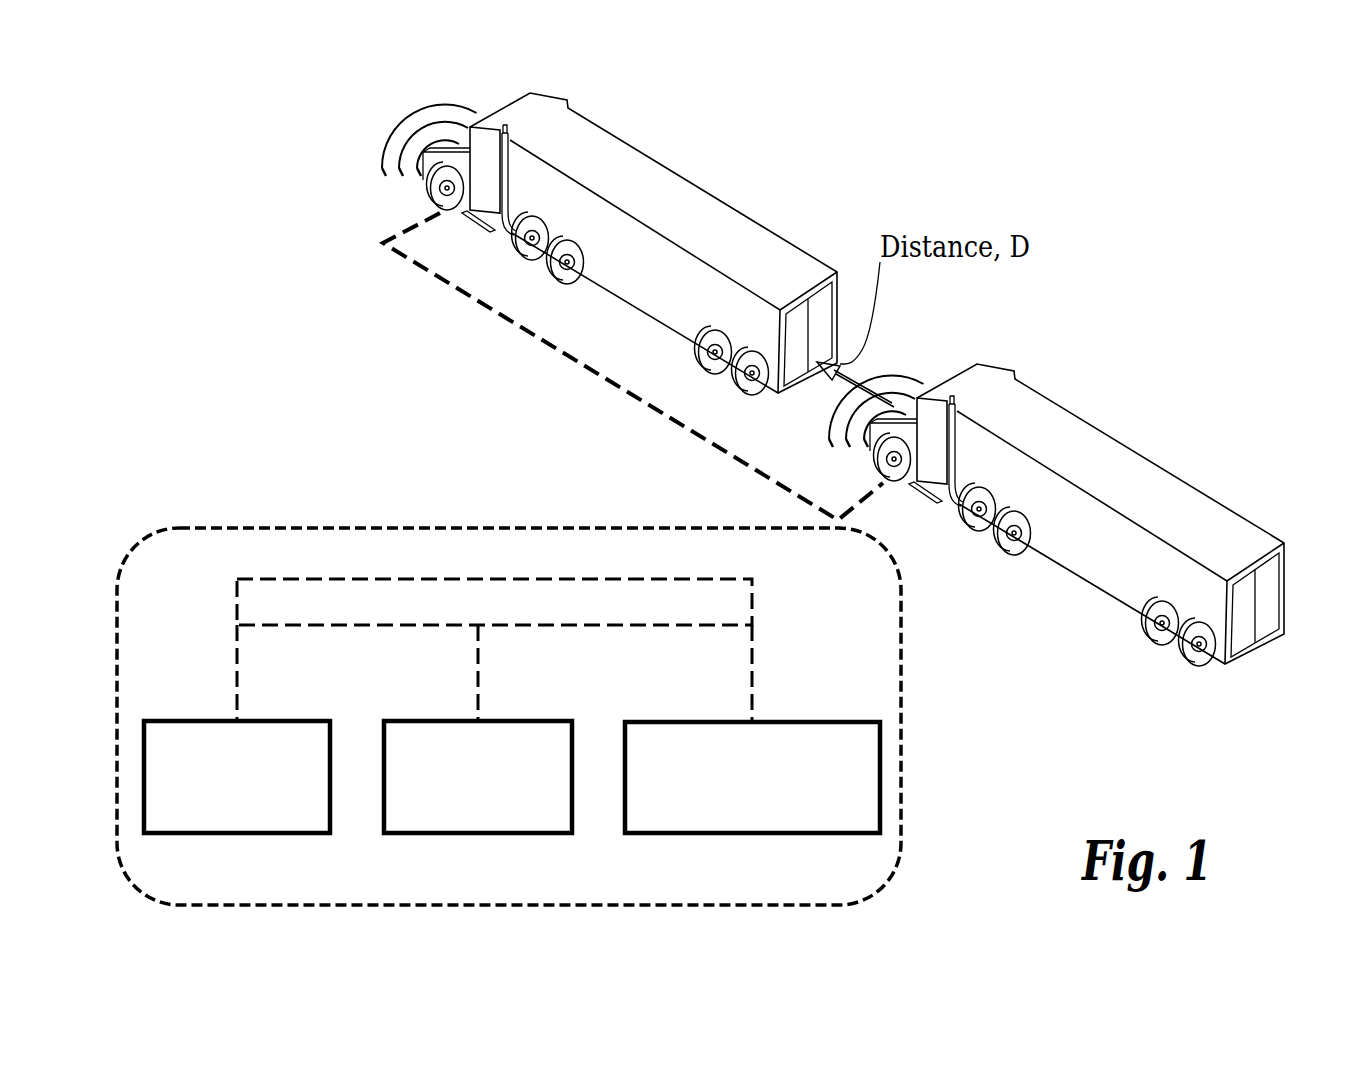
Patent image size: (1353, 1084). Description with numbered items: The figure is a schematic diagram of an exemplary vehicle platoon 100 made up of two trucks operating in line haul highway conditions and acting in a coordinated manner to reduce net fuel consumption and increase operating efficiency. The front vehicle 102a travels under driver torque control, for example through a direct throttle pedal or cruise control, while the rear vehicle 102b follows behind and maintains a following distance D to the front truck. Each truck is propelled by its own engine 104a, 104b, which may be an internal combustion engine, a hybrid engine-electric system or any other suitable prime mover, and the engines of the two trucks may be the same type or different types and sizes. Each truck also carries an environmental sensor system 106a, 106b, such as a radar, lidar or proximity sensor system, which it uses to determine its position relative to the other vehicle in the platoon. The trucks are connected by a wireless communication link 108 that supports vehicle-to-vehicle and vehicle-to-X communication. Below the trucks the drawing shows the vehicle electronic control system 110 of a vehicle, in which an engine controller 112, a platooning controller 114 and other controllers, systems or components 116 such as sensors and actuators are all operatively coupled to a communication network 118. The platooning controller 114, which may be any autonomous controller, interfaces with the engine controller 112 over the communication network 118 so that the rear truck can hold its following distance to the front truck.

The vehicle platoon 100 is at (1203, 277).
The front vehicle 102a is at (713, 192).
The rear vehicle 102b is at (1103, 430).
The engine of front vehicle 104a is at (425, 157).
The engine of rear vehicle 104b is at (915, 406).
The environmental sensor system of front vehicle 106a is at (443, 150).
The environmental sensor system of rear vehicle 106b is at (867, 428).
The wireless communication link 108 is at (423, 273).
The vehicle electronic control system 110 is at (915, 672).
The engine controller 112 is at (257, 834).
The platooning controller 114 is at (468, 834).
The other controllers, systems or components 116 is at (757, 835).
The communication network 118 is at (323, 579).